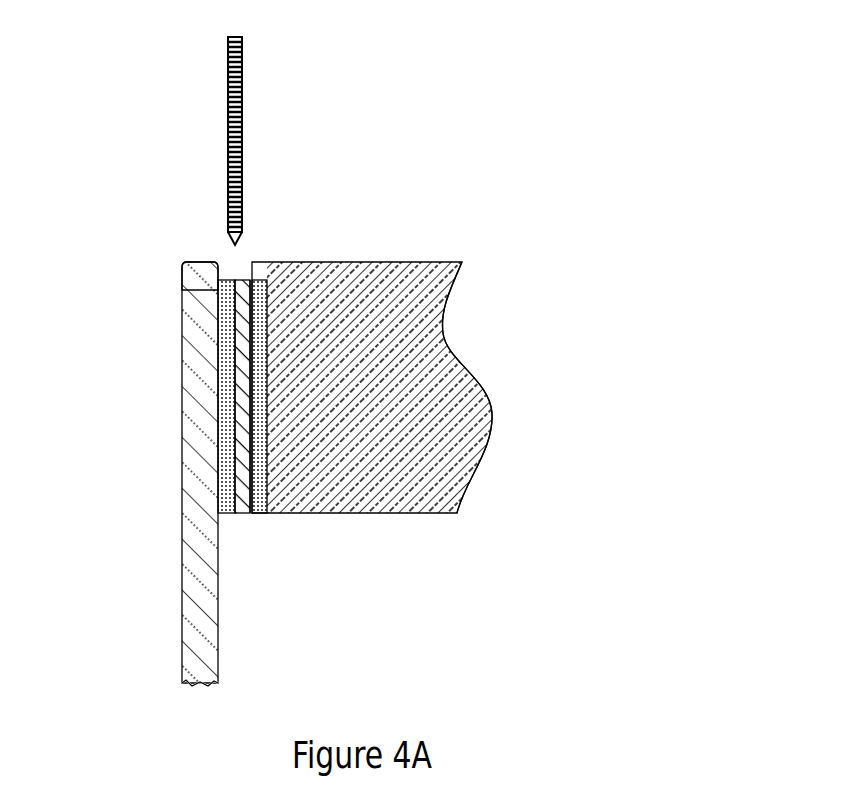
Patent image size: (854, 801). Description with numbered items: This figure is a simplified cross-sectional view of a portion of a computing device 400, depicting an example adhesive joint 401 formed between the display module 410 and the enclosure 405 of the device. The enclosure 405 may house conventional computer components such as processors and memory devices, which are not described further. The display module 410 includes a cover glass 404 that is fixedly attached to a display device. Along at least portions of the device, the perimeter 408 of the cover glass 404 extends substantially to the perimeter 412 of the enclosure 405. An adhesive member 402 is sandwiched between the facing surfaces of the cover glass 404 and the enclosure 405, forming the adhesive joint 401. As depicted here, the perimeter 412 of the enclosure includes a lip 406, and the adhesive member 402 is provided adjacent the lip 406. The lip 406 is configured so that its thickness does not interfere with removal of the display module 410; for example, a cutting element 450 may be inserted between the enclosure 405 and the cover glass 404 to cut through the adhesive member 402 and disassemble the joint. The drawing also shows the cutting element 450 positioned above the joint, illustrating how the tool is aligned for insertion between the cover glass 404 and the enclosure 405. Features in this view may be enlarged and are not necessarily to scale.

The computing device 400 is at (628, 521).
The adhesive joint 401 is at (282, 610).
The adhesive member 402 is at (258, 510).
The cover glass 404 is at (182, 606).
The enclosure 405 is at (445, 298).
The lip 406 is at (264, 262).
The perimeter of the cover glass 408 is at (203, 262).
The display module 410 is at (108, 425).
The perimeter of the enclosure 412 is at (352, 262).
The cutting element 450 is at (242, 119).